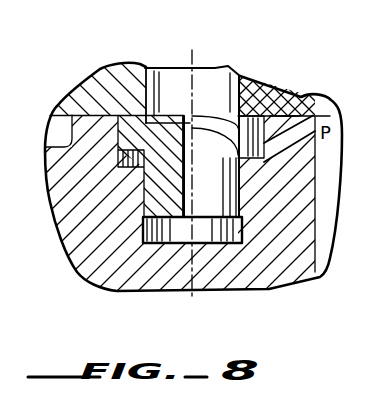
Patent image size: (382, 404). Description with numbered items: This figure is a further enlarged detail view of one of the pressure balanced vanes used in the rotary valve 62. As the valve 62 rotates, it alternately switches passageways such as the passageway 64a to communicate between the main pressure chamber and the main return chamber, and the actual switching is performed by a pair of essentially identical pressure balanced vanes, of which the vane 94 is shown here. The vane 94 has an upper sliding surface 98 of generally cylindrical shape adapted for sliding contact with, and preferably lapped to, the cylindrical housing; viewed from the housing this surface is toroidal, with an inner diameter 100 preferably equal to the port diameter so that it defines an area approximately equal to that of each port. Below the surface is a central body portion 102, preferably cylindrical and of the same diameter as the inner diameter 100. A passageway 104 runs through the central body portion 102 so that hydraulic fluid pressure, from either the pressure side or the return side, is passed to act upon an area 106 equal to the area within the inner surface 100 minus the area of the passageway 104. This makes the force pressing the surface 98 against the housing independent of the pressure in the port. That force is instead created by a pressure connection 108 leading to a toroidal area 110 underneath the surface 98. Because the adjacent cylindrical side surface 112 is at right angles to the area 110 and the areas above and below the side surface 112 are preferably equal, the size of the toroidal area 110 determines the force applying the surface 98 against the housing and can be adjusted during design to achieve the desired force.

The valve 62 is at (66, 282).
The passageway 64a is at (208, 74).
The pressure balanced vane 94 is at (281, 115).
The upper sliding surface 98 is at (264, 80).
The inner diameter 100 is at (153, 114).
The central body portion 102 is at (155, 187).
The passageway 104 is at (182, 205).
The area 106 is at (141, 290).
The pressure connection 108 is at (302, 143).
The toroidal area 110 is at (244, 201).
The cylindrical side surface 112 is at (290, 115).